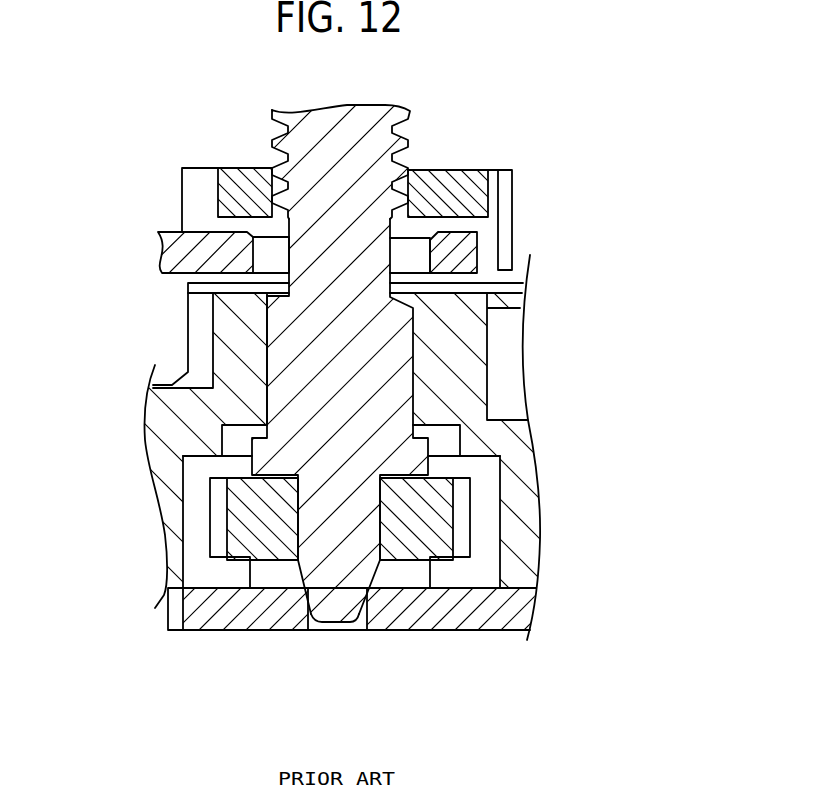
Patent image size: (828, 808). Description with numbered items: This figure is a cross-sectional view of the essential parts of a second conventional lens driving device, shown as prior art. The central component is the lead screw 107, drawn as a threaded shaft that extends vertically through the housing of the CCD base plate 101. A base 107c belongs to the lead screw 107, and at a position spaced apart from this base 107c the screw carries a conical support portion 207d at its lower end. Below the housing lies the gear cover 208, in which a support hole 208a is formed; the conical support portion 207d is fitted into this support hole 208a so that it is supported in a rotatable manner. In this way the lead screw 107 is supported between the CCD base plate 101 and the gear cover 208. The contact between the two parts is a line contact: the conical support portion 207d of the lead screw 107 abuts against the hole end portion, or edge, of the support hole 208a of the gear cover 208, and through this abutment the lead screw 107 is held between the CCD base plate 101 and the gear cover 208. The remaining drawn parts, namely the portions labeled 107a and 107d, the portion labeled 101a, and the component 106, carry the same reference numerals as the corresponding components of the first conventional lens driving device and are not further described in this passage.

The lead screw 107 is at (633, 104).
The threaded portion of screw 107a is at (418, 118).
The base 107c is at (345, 263).
The shaft portion of screw 107d is at (400, 400).
The CCD base plate 101 is at (175, 425).
The boss portion of housing 101a is at (470, 345).
The nut 106 is at (440, 521).
The conical support portion 207d is at (342, 612).
The gear cover 208 is at (472, 615).
The support hole 208a is at (362, 616).